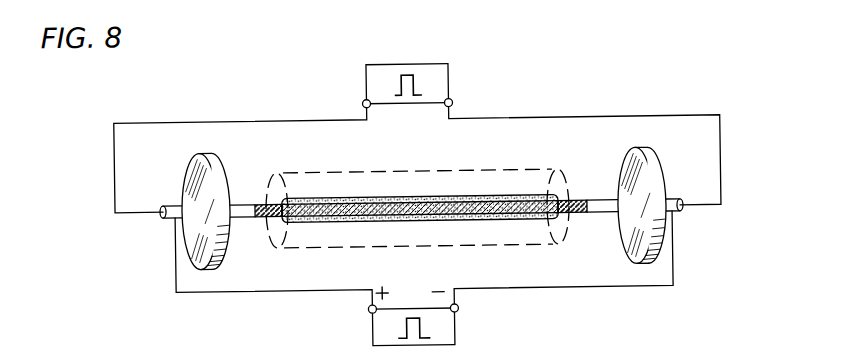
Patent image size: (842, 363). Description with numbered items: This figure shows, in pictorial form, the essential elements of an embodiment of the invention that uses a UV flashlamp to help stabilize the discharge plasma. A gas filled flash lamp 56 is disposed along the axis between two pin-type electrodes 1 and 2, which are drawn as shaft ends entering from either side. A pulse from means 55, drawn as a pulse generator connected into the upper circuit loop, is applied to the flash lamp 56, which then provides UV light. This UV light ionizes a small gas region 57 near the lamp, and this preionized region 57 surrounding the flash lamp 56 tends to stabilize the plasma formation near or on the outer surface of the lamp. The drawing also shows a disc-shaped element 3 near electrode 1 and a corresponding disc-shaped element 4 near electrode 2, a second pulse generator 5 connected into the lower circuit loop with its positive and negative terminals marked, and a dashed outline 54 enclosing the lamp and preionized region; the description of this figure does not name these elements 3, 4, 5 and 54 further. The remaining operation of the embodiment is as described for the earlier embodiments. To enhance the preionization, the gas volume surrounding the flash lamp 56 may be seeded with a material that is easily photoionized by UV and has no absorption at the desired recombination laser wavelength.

The pin-type electrode 1 is at (172, 203).
The pin-type electrode 2 is at (678, 202).
The first wheel 3 is at (218, 166).
The second wheel 4 is at (660, 174).
The pulse generator (lower) 5 is at (371, 327).
The enclosure / cylinder 54 is at (492, 172).
The pulse means 55 is at (368, 83).
The gas filled flash lamp 56 is at (343, 197).
The preionized gas region 57 is at (413, 197).